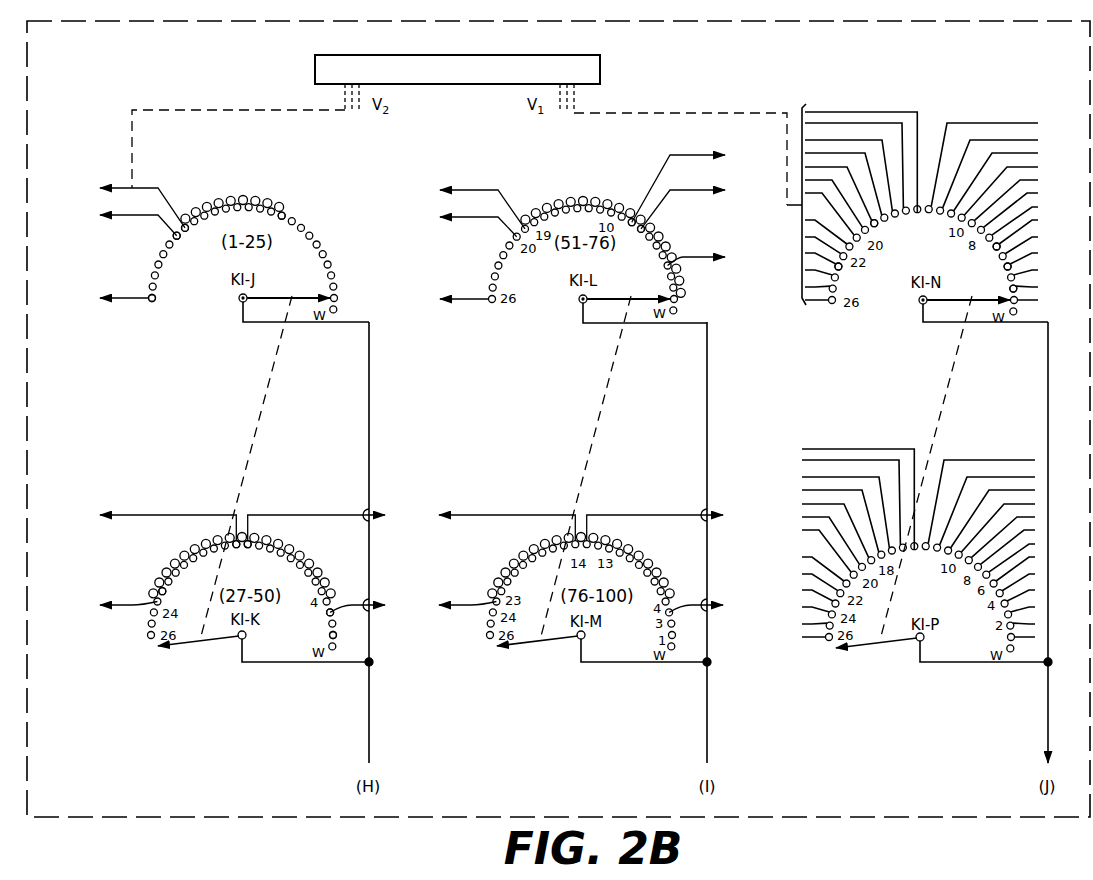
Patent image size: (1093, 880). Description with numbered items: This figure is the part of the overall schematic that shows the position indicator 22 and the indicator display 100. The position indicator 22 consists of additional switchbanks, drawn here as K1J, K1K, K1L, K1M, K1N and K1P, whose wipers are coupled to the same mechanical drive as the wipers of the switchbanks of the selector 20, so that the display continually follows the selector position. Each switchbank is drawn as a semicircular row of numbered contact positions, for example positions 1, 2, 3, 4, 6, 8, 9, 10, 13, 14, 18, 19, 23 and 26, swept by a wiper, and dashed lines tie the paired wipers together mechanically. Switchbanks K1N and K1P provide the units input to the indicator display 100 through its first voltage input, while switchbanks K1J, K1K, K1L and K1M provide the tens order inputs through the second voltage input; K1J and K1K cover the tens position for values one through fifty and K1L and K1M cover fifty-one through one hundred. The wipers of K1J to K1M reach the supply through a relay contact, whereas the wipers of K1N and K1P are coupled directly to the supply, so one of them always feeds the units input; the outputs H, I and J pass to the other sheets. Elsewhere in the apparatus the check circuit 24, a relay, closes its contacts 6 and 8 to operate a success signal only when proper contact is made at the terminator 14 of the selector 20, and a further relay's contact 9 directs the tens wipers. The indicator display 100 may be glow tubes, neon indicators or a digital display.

The position indicator 22 is at (640, 21).
The indicator display 100 is at (600, 68).
The switch contact 1 is at (327, 635).
The switch contact 2 is at (1007, 290).
The switch contact 3 is at (323, 617).
The switch contact 4 is at (1000, 271).
The contact 6 is at (991, 253).
The contact 8 is at (637, 236).
The contact 9 is at (628, 231).
The switch contact 10 is at (285, 227).
The switch contact 13 is at (255, 555).
The terminator 14 is at (240, 555).
The switch contact 18 is at (888, 230).
The switch contact 19 is at (199, 233).
The selector 20 is at (185, 244).
The switch contact 23 is at (171, 598).
The check circuit 24 is at (847, 274).
The switch contact 26 is at (164, 299).